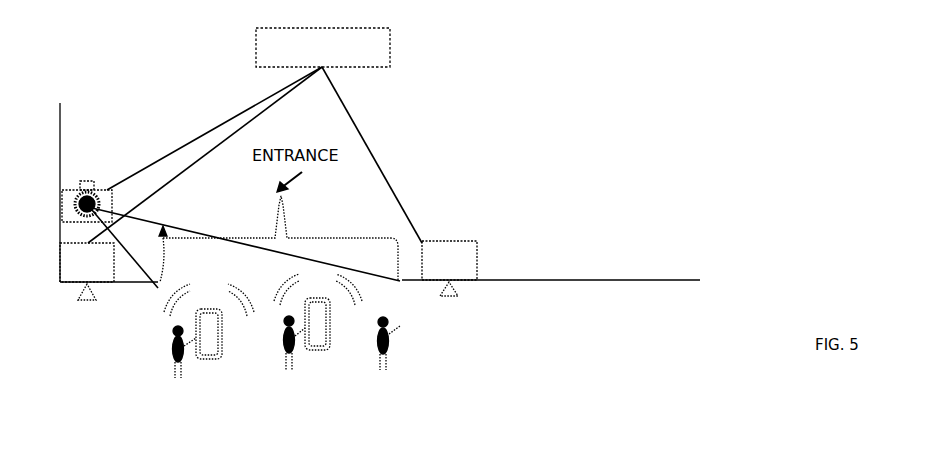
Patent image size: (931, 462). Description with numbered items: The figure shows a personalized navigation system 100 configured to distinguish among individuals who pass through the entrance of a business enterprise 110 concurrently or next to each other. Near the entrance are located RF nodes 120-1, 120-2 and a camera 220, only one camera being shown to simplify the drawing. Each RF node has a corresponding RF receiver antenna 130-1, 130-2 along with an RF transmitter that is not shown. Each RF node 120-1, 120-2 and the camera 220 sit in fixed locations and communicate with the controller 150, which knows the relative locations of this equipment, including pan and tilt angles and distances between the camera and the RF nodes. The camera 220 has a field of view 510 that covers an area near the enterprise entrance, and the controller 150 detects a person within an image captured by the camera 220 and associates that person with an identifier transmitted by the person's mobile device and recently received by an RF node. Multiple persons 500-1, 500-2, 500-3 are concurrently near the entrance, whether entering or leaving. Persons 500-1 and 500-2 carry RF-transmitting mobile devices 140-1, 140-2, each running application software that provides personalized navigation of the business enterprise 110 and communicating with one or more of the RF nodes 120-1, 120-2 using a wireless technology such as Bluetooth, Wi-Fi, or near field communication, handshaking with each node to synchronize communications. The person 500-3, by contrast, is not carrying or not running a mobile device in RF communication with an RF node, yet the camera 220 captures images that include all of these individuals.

The personalized navigation system 100 is at (725, 53).
The business enterprise 110 is at (55, 128).
The controller 150 is at (255, 135).
The camera 220 is at (62, 207).
The RF node 120-1 is at (68, 257).
The RF node 120-2 is at (470, 281).
The RF receiver antenna 130-1 is at (84, 301).
The RF receiver antenna 130-2 is at (447, 297).
The field of view 510 is at (148, 268).
The person 500-1 is at (170, 343).
The person 500-2 is at (281, 348).
The person 500-3 is at (394, 368).
The mobile device 140-1 is at (211, 356).
The mobile device 140-2 is at (318, 346).